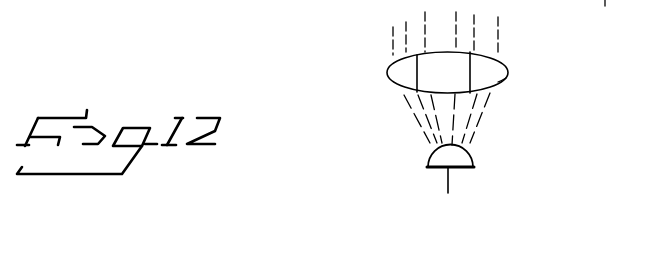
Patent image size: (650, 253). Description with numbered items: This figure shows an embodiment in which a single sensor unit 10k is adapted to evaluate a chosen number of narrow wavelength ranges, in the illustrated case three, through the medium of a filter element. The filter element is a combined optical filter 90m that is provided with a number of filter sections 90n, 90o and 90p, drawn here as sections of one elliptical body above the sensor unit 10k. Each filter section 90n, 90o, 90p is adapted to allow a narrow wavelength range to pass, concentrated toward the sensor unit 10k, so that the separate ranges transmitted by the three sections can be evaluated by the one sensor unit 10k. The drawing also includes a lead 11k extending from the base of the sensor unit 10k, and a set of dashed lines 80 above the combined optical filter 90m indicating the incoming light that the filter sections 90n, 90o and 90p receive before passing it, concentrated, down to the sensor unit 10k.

The emitted light beams 80 is at (450, 37).
The filter section 90n is at (400, 71).
The filter section 90o is at (435, 81).
The combined optical filter 90m is at (497, 74).
The filter section 90p is at (505, 79).
The sensor unit 10k is at (467, 157).
The LED lead 11k is at (447, 184).